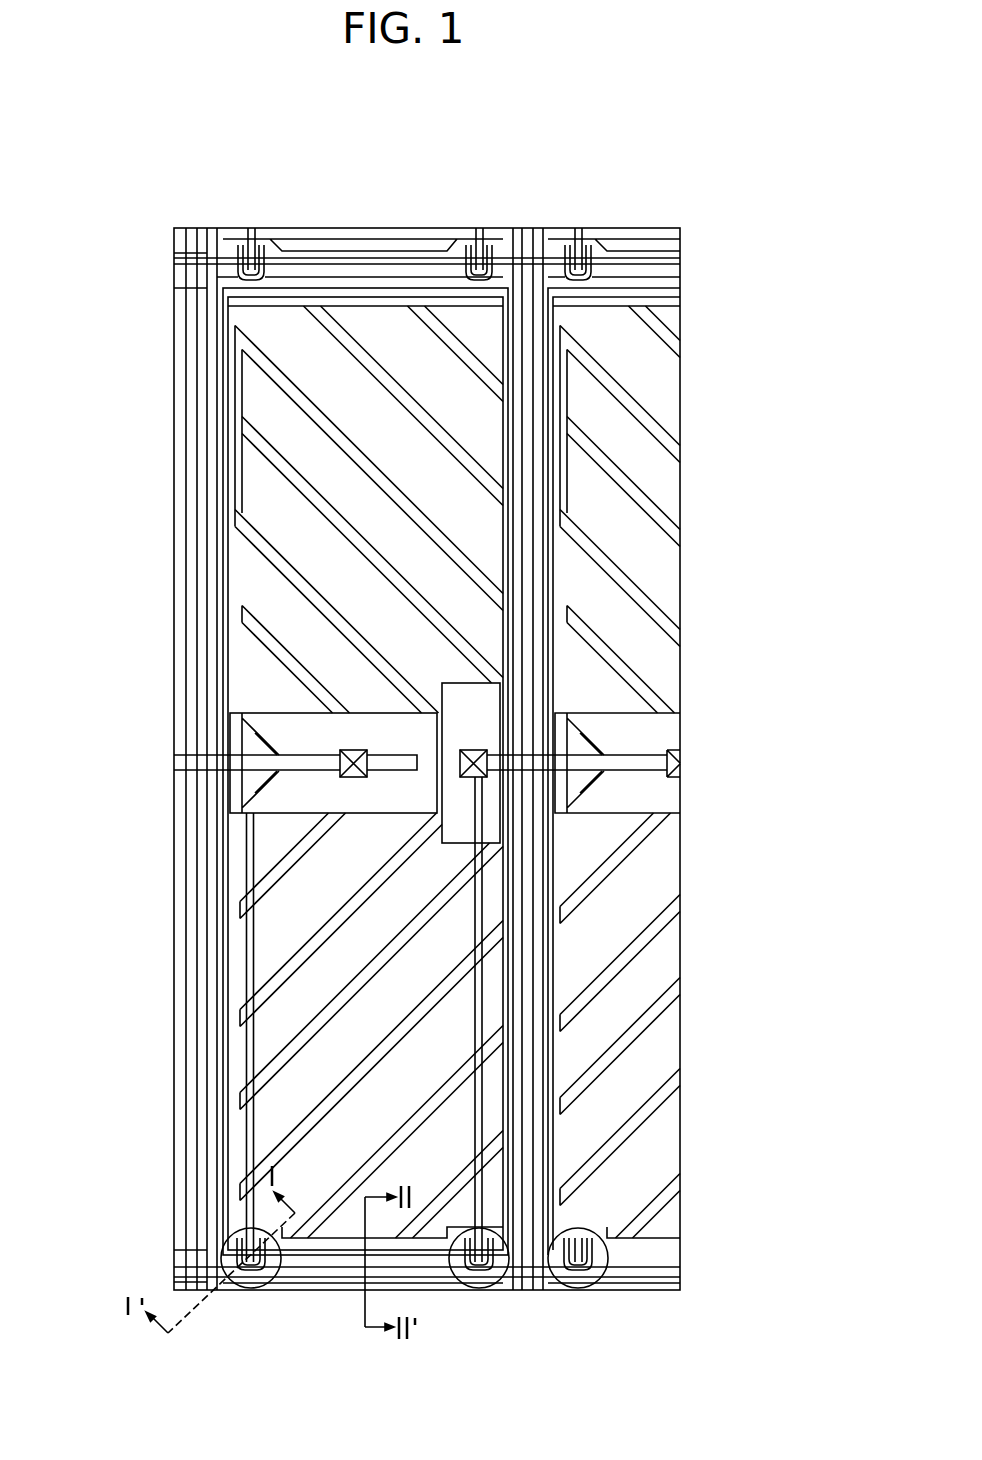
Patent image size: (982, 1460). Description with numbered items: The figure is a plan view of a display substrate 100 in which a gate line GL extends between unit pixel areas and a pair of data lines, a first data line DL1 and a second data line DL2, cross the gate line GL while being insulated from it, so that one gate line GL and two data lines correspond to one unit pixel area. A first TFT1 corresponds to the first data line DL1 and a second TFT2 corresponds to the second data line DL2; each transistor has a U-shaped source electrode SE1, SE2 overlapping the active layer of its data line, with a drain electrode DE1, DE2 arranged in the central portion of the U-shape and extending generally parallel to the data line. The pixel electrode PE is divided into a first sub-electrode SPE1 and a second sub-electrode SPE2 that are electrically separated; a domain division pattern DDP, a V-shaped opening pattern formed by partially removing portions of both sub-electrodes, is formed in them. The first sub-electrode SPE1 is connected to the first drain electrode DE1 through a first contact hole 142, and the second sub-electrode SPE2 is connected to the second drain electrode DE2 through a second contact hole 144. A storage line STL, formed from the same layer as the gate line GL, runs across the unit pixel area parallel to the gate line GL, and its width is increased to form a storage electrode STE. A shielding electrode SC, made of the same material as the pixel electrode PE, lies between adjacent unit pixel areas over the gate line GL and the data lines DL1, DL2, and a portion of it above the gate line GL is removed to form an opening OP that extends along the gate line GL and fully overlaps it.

The display substrate 100 is at (416, 98).
The gate line GL is at (174, 270).
The first data line DL1 is at (212, 1292).
The second data line DL2 is at (518, 1288).
The shielding electrode SC is at (174, 852).
The opening OP is at (367, 272).
The pixel electrode PE is at (72, 490).
The first sub-electrode SPE1 is at (262, 568).
The second sub-electrode SPE2 is at (262, 492).
The domain division pattern DDP is at (265, 456).
The storage electrode STE is at (253, 714).
The storage line STL is at (174, 766).
The first contact hole 142 is at (347, 750).
The second contact hole 144 is at (475, 750).
The first drain electrode DE1 is at (250, 1133).
The second drain electrode DE2 is at (482, 1100).
The first TFT TFT1 is at (240, 1250).
The second TFT TFT2 is at (475, 1290).
The first source electrode SE1 is at (277, 1290).
The second source electrode SE2 is at (510, 1288).